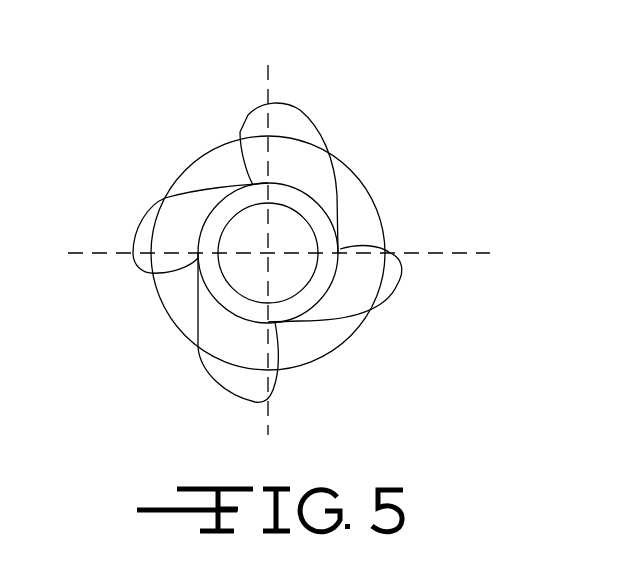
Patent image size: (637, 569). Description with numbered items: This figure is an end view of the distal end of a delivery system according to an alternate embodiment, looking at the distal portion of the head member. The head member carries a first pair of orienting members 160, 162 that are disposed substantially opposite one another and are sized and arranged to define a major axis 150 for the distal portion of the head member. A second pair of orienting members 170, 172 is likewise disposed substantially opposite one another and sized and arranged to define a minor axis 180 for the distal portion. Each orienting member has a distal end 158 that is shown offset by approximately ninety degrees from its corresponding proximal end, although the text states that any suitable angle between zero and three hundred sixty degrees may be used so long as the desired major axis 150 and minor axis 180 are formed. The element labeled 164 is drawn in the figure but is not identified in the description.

The major axis 150 is at (270, 75).
The distal end 158 is at (242, 166).
The orienting member 160 is at (336, 202).
The orienting member 162 is at (318, 125).
The lower vane 164 is at (220, 385).
The orienting member 170 is at (401, 255).
The orienting member 172 is at (131, 235).
The minor axis 180 is at (448, 253).